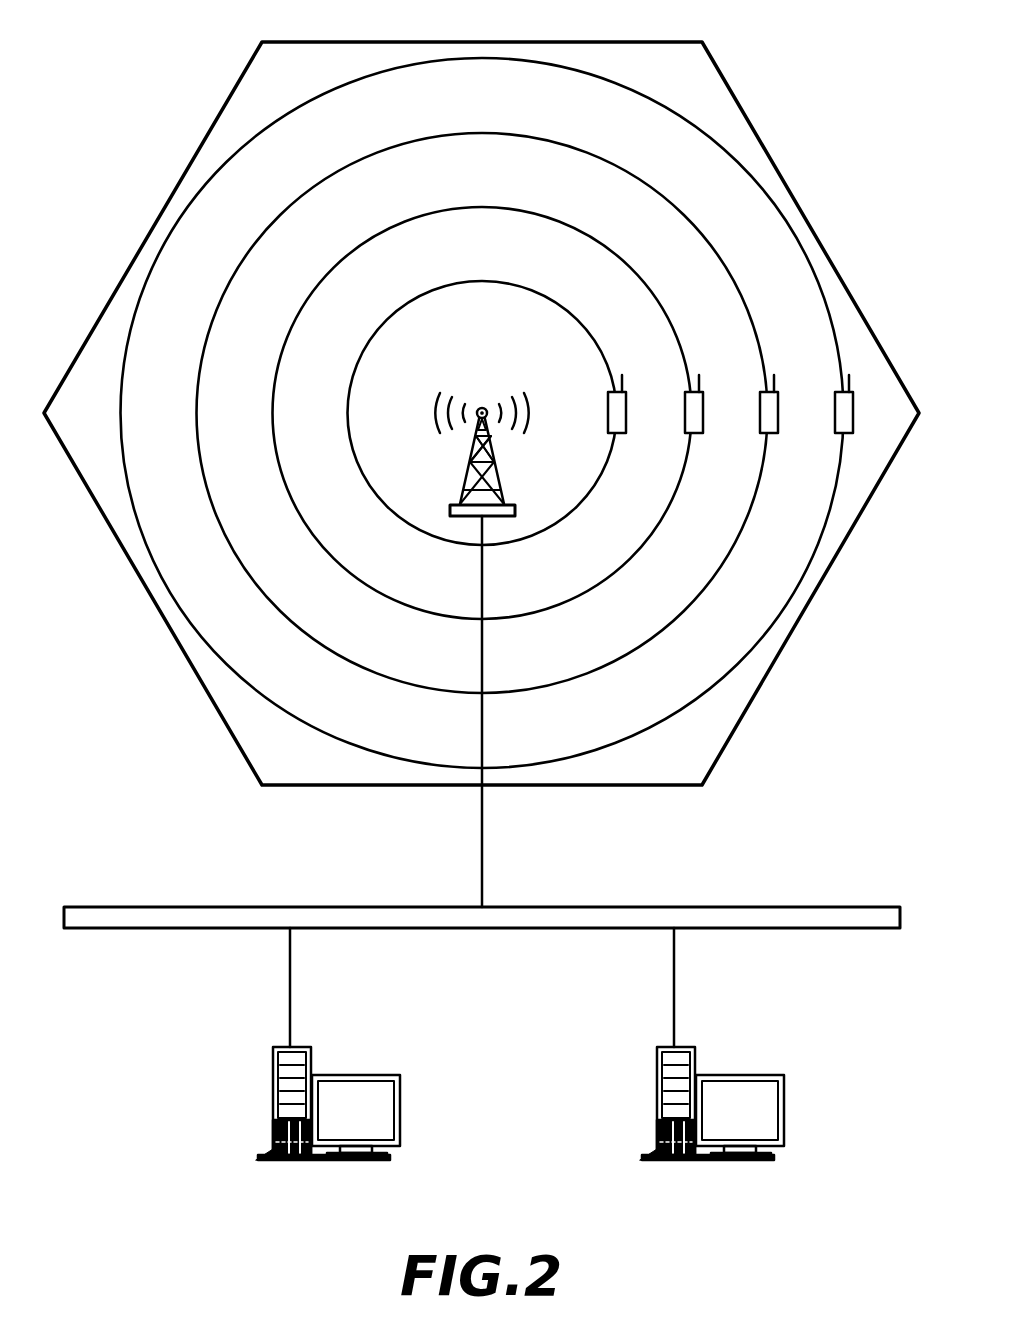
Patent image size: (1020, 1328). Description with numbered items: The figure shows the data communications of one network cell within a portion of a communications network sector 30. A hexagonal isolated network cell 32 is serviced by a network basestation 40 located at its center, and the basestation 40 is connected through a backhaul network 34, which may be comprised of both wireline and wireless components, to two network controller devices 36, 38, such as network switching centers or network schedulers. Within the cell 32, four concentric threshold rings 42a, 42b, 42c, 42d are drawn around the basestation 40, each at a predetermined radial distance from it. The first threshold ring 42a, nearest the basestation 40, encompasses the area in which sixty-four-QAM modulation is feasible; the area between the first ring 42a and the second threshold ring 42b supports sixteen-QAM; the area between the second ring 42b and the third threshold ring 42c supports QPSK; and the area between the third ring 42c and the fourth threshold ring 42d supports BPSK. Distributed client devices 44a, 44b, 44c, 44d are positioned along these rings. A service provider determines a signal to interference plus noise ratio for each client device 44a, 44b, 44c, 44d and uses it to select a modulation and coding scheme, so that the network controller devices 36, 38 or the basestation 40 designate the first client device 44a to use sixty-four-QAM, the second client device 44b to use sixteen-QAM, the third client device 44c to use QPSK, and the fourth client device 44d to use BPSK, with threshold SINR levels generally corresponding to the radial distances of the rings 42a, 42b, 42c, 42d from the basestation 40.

The communications network sector 30 is at (126, 75).
The isolated network cell 32 is at (731, 90).
The backhaul network 34 is at (830, 907).
The network controller device 36 is at (657, 1072).
The network controller device 38 is at (273, 1072).
The network basestation 40 is at (465, 483).
The first threshold ring 42a is at (543, 297).
The second threshold ring 42b is at (578, 228).
The third threshold ring 42c is at (615, 165).
The fourth threshold ring 42d is at (648, 97).
The first client device 44a is at (609, 427).
The second client device 44b is at (686, 427).
The third client device 44c is at (761, 427).
The fourth client device 44d is at (836, 427).